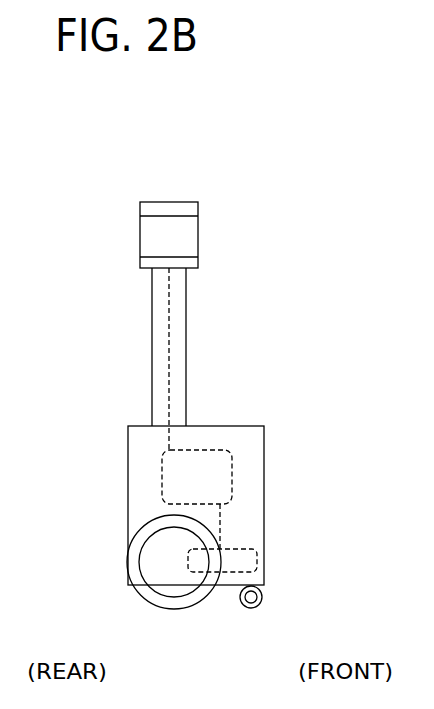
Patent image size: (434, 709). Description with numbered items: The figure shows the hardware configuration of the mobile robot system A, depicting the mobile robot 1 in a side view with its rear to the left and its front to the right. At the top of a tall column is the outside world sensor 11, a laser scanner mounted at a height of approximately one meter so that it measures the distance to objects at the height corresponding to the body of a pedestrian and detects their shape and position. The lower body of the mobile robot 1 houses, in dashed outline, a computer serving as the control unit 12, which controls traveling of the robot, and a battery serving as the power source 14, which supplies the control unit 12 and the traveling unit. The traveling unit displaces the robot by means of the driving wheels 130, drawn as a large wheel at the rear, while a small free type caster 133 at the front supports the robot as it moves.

The mobile robot system A is at (50, 257).
The mobile robot 1 is at (93, 358).
The outside world sensor 11 is at (165, 201).
The control unit 12 is at (162, 473).
The power source 14 is at (227, 574).
The driving wheels 130 is at (171, 609).
The free type caster 133 is at (257, 610).